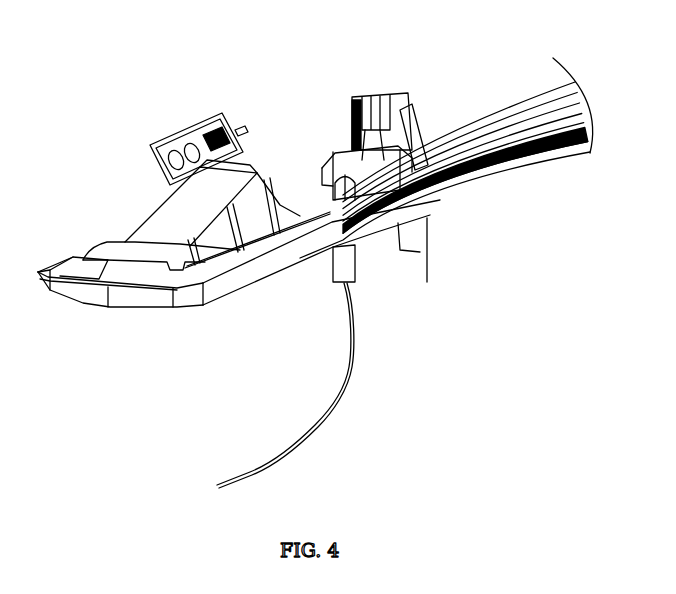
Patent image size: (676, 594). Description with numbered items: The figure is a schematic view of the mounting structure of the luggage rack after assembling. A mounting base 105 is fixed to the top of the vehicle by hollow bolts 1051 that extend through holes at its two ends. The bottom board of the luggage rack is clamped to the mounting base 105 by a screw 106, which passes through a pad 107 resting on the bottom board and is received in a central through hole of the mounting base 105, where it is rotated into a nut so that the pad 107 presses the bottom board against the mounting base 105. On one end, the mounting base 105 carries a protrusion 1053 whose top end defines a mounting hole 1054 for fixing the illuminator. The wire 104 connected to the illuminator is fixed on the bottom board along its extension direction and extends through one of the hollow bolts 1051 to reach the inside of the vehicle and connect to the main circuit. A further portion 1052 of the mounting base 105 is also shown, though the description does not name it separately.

The wire 104 is at (348, 390).
The mounting base 105 is at (389, 227).
The hollow bolt 1051 is at (357, 282).
The support seat 1052 is at (405, 188).
The protrusion 1053 is at (432, 122).
The mounting hole 1054 is at (376, 80).
The screw 106 is at (352, 158).
The pad 107 is at (457, 183).